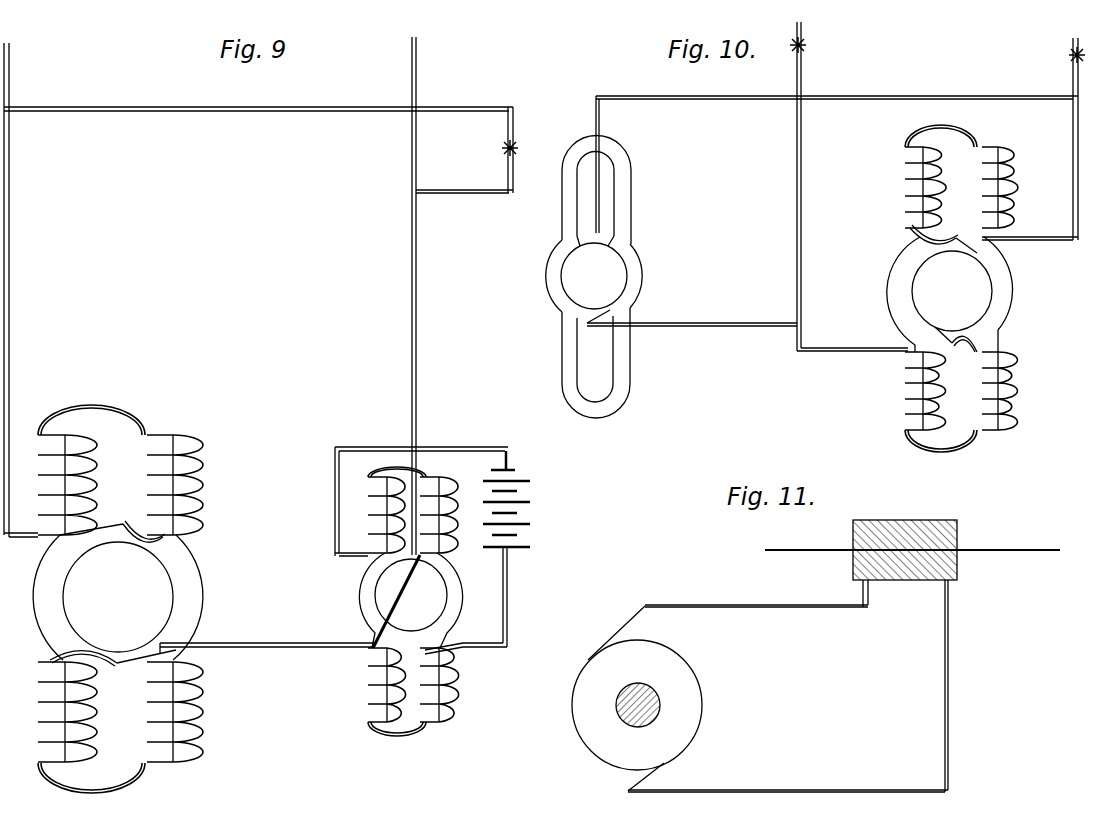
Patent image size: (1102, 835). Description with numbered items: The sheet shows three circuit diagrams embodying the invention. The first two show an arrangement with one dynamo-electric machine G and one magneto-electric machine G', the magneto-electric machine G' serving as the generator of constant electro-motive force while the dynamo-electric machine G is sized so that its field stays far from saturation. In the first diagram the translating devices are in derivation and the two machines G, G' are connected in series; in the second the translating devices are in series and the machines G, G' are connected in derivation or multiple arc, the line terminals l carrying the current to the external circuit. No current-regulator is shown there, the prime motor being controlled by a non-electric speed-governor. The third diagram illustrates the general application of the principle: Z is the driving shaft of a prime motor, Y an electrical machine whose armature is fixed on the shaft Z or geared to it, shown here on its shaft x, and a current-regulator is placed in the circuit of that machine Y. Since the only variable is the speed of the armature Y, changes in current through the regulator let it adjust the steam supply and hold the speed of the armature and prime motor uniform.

In FIG. 9, the dynamo-electric machine G is at (118, 599).
In FIG. 10, the dynamo-electric machine G is at (966, 288).
In FIG. 9, the magneto-electric machine G' is at (410, 601).
In FIG. 10, the magneto-electric machine G' is at (611, 277).
In FIG. 9, the line conductor terminal l is at (518, 137).
In FIG. 10, the line conductor terminal l is at (937, 49).
In FIG. 11, the shaft x is at (903, 541).
In FIG. 11, the electrical machine Y is at (637, 705).
In FIG. 11, the driving shaft Z is at (657, 702).